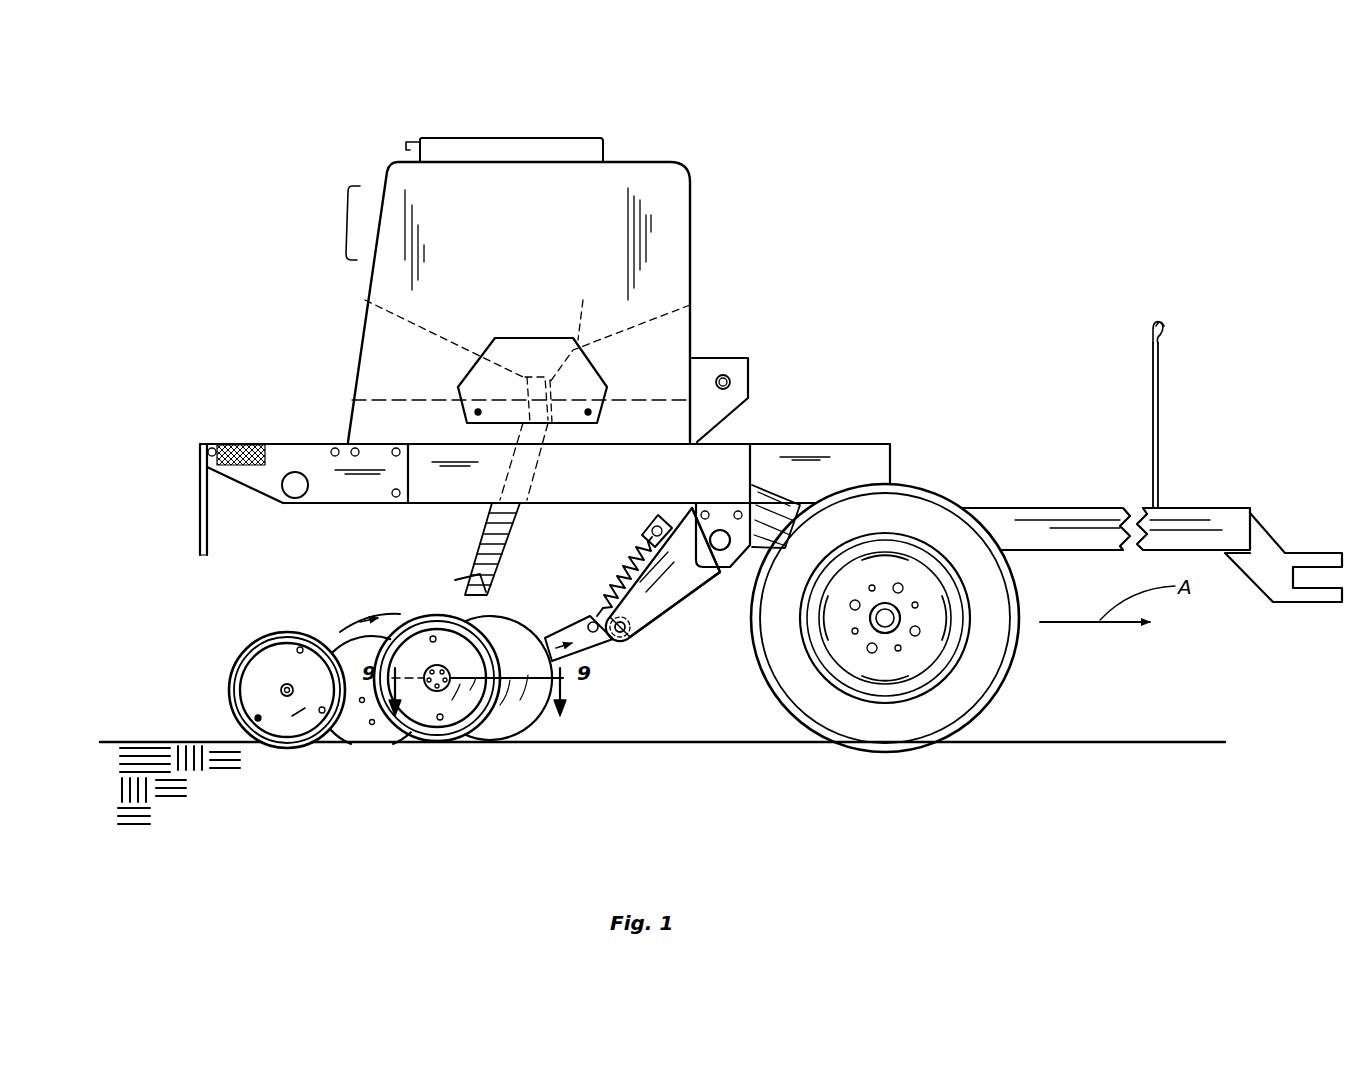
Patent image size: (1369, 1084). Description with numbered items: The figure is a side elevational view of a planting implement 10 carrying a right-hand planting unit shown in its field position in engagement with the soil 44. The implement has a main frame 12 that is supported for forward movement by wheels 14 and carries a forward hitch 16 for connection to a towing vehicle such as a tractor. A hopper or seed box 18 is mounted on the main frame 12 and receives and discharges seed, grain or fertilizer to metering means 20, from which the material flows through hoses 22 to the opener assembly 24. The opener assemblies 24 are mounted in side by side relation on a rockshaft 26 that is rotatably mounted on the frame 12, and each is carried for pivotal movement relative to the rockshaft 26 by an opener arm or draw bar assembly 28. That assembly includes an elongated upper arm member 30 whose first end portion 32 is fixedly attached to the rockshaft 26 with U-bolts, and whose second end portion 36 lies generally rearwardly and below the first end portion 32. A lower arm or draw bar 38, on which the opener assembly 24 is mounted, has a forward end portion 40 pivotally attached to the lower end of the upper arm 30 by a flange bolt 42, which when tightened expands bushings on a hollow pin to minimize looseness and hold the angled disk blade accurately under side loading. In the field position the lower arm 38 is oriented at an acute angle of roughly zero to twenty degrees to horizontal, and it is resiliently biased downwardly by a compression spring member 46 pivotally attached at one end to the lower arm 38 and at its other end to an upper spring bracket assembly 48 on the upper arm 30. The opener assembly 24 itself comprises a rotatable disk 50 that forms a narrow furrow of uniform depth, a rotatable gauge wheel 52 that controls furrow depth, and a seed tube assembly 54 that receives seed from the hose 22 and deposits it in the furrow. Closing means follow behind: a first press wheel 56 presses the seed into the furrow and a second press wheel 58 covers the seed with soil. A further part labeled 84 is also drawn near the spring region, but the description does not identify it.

The planting implement 10 is at (180, 650).
The main frame 12 is at (860, 442).
The wheels 14 is at (1022, 670).
The forward hitch 16 is at (1320, 549).
The hopper 18 is at (700, 185).
The metering means 20 is at (562, 380).
The hoses 22 is at (490, 532).
The opener assembly 24 is at (545, 738).
The rockshaft 26 is at (723, 512).
The opener arm or draw bar assembly 28 is at (685, 632).
The upper arm member 30 is at (705, 600).
The first end portion 32 is at (724, 572).
The second end portion 36 is at (631, 638).
The lower arm 38 is at (560, 628).
The forward end portion 40 is at (608, 645).
The flange bolt 42 is at (632, 642).
The soil 44 is at (850, 798).
The compression spring member 46 is at (606, 572).
The upper spring bracket assembly 48 is at (677, 502).
The rotatable disk 50 is at (473, 754).
The gauge wheel 52 is at (397, 616).
The seed tube assembly 54 is at (452, 583).
The first press wheel 56 is at (334, 740).
The second press wheel 58 is at (256, 650).
The spring mount 84 is at (640, 552).